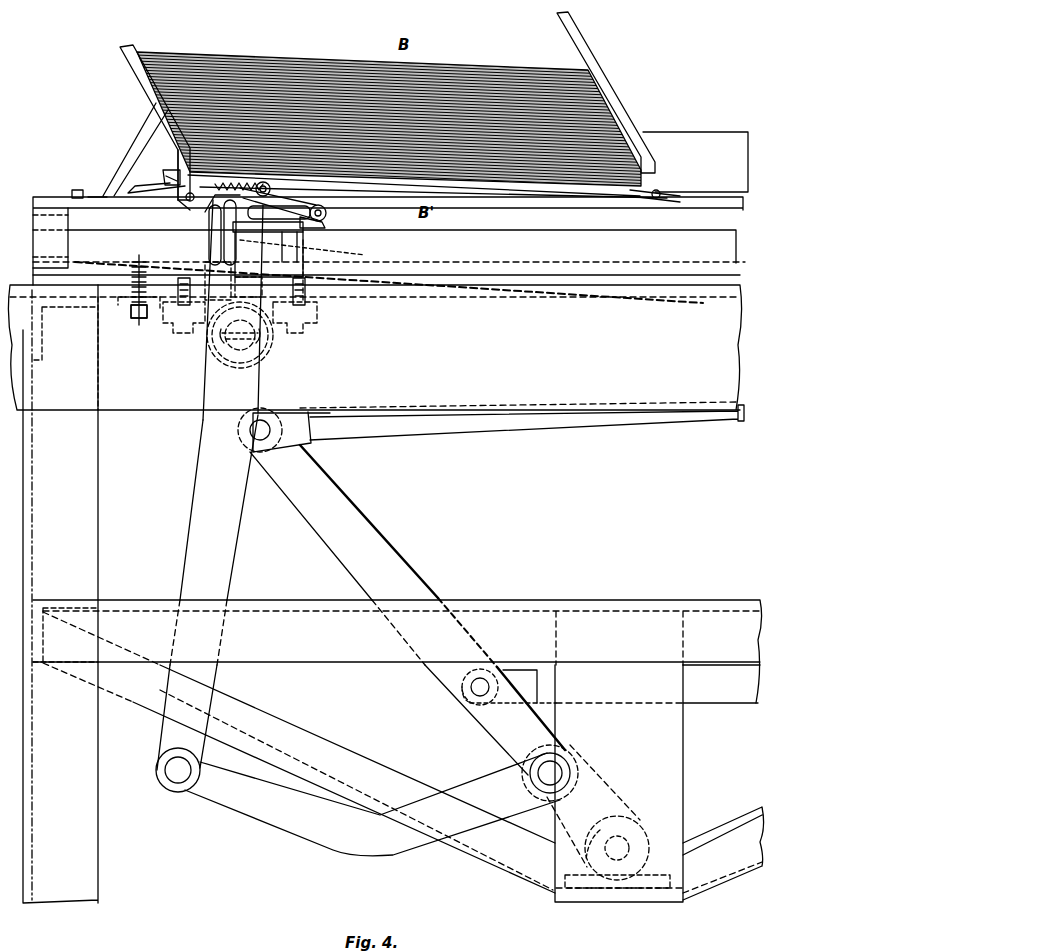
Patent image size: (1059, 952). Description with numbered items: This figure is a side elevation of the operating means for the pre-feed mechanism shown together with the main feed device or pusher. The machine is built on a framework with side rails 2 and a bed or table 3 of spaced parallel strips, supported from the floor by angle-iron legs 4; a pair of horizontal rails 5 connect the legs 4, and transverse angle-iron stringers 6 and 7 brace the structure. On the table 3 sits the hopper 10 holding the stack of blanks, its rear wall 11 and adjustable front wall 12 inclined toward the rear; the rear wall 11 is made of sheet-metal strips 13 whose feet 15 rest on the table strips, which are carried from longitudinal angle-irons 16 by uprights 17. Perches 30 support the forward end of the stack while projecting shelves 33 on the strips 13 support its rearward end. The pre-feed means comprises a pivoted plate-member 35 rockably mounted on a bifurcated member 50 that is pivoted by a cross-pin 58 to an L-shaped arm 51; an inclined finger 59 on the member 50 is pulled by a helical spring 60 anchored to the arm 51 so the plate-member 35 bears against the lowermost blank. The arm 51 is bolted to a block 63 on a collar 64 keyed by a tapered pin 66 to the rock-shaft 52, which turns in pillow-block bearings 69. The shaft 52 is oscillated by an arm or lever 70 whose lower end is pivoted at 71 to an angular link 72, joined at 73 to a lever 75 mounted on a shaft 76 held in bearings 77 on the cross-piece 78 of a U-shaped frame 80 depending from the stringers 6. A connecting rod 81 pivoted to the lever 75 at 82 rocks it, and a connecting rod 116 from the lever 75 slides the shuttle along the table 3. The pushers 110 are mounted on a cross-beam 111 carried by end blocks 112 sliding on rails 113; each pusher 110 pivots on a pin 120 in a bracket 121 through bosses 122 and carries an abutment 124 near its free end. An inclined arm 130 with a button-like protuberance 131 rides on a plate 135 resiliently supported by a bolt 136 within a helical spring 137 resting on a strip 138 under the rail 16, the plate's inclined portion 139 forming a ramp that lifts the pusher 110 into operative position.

The side rails 2 is at (173, 404).
The bed or table 3 is at (491, 200).
The angle-iron legs 4 is at (80, 538).
The horizontal rails 5 is at (518, 612).
The angle-iron stringer 6 is at (52, 636).
The angle-iron stringer 7 is at (45, 345).
The hopper 10 is at (366, 57).
The rear wall 11 is at (139, 105).
The front wall 12 is at (555, 30).
The sheet-metal strips 13 is at (128, 64).
The feet 15 is at (79, 189).
The angle-irons 16 is at (402, 232).
The uprights 17 is at (42, 240).
The perches 30 is at (628, 200).
The shelves 33 is at (182, 158).
The pivoted rest or plate-member 35 is at (175, 211).
The rockable member 50 is at (193, 202).
The L-shaped arm 51 is at (210, 235).
The rock-shaft 52 is at (226, 356).
The cross-pin 58 is at (272, 190).
The inclined finger 59 is at (288, 190).
The helical spring 60 is at (255, 212).
The block 63 is at (262, 316).
The collar 64 is at (262, 348).
The tapered pin 66 is at (222, 345).
The pillow-block bearings 69 is at (322, 314).
The arm or lever 70 is at (222, 549).
The pivotal connection 71 is at (176, 775).
The angular link 72 is at (334, 840).
The pivotal joint 73 is at (547, 774).
The lever 75 is at (408, 565).
The shaft 76 is at (622, 845).
The bearings 77 is at (600, 830).
The cross-piece 78 is at (576, 890).
The U-shaped frame 80 is at (493, 877).
The connecting rod 81 is at (734, 690).
The pivotal connection 82 is at (470, 690).
The pushers 110 is at (150, 186).
The cross-beam 111 is at (279, 229).
The end blocks 112 is at (306, 247).
The rails 113 is at (120, 260).
The connecting rod 116 is at (455, 430).
The pins 120 is at (322, 222).
The brackets 121 is at (293, 232).
The bosses 122 is at (328, 218).
The abutment 124 is at (165, 170).
The inclined arm 130 is at (210, 215).
The protuberance 131 is at (210, 264).
The plate 135 is at (309, 247).
The pin or bolt 136 is at (136, 320).
The helical spring 137 is at (155, 258).
The strip 138 is at (134, 300).
The inclined portion 139 is at (556, 276).